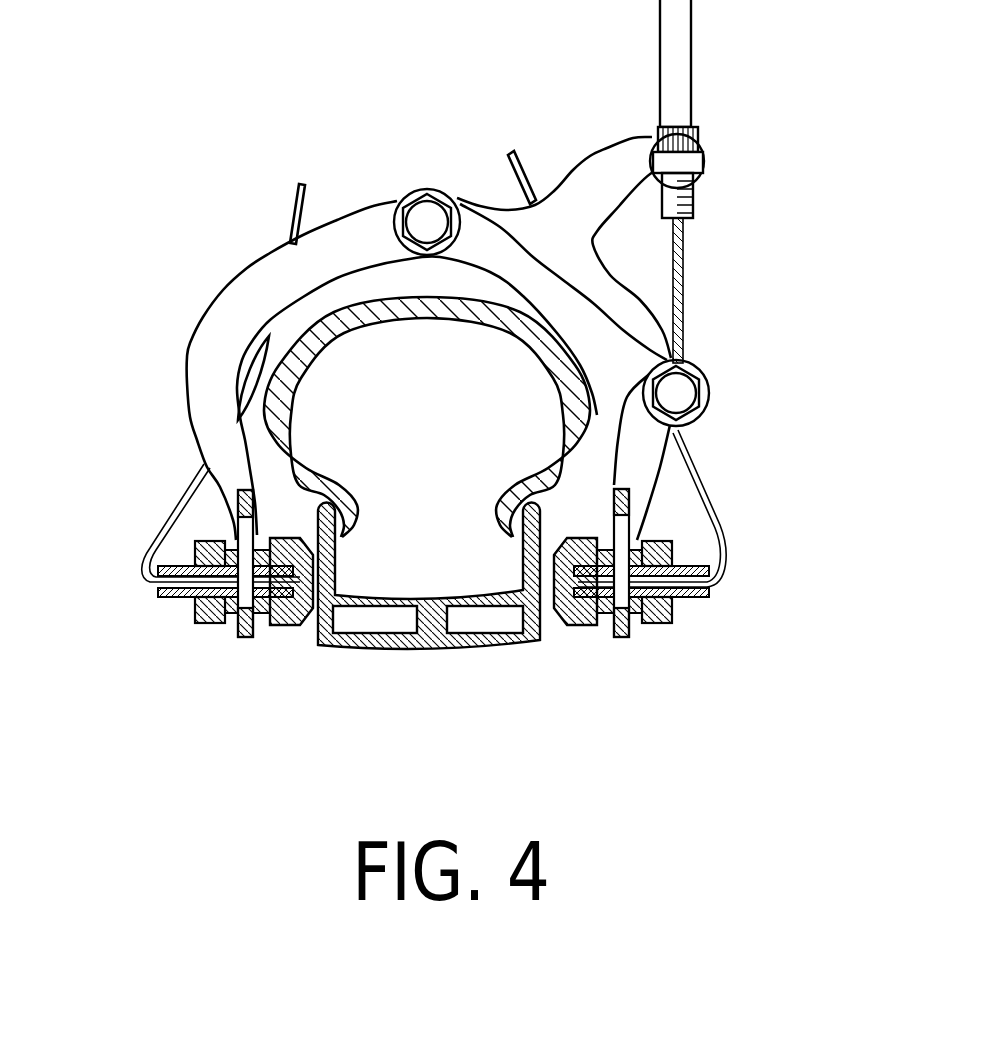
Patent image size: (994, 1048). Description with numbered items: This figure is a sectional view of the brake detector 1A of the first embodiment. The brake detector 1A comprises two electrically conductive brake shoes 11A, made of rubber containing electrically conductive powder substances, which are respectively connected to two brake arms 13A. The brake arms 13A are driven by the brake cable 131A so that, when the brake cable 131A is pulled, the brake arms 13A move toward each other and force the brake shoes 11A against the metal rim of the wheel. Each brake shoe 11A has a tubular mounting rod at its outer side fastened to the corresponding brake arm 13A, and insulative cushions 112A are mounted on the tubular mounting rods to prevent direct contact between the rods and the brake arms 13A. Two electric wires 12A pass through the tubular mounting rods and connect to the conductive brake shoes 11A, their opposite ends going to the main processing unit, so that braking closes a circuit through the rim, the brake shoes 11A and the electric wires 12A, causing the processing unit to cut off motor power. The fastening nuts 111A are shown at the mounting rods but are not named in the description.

The brake detector 1A is at (490, 270).
The brake shoe 11A is at (287, 627).
The nut 111A is at (187, 597).
The insulative cushion 112A is at (243, 630).
The electric wire 12A is at (173, 523).
The brake arm 13A is at (222, 322).
The brake cable 131A is at (683, 237).